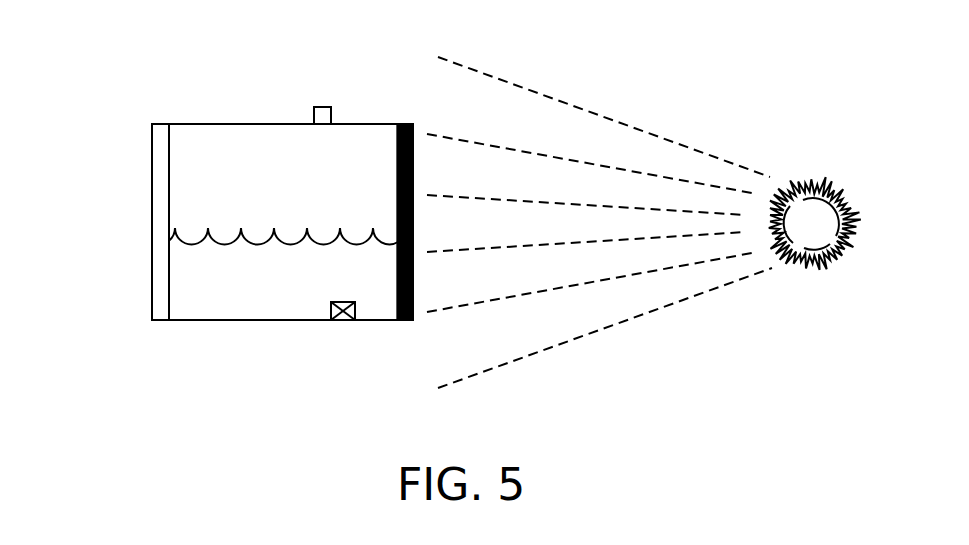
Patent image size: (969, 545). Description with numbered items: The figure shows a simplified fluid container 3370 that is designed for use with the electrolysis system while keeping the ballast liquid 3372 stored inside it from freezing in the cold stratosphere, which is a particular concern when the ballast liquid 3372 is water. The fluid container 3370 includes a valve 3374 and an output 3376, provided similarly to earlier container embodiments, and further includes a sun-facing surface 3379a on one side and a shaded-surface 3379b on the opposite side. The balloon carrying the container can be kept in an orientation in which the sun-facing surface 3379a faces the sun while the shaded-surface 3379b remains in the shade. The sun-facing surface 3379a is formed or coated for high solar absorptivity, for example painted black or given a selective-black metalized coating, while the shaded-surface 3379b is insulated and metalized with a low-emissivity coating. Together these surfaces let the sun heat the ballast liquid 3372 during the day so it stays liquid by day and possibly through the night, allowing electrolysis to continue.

The fluid container 3370 is at (233, 322).
The ballast liquid 3372 is at (200, 288).
The valve 3374 is at (340, 320).
The output 3376 is at (323, 115).
The sun-facing surface 3379a is at (413, 140).
The shaded-surface 3379b is at (158, 153).